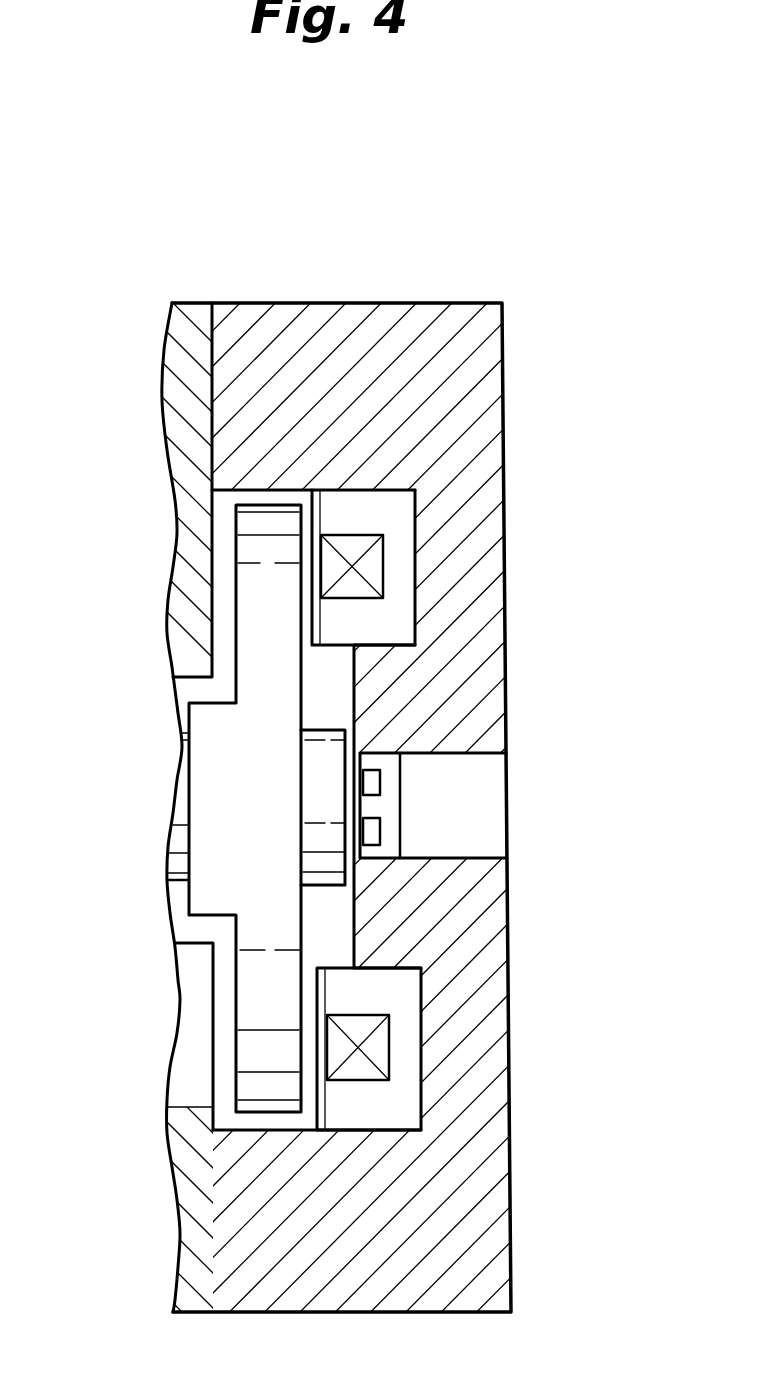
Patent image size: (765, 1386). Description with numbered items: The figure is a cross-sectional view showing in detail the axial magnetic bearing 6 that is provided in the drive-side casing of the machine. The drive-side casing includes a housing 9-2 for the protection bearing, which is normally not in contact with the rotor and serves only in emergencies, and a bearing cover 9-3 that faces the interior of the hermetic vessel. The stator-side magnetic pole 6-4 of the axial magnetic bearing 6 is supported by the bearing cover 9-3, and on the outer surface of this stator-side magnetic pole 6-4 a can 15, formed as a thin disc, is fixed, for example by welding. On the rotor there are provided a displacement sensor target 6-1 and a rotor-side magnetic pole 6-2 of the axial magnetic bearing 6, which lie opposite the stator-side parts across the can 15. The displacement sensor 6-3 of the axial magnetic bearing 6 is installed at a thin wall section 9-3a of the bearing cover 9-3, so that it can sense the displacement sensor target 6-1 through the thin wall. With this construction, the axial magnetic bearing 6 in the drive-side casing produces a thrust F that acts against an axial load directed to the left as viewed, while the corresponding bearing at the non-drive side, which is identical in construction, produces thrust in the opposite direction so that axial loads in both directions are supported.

The housing 9-2 is at (192, 320).
The bearing cover 9-3 is at (407, 358).
The thin wall section 9-3a is at (357, 748).
The displacement sensor 6-3 is at (392, 810).
The stator-side magnetic pole 6-4 is at (402, 547).
The axial magnetic bearing 6 is at (413, 1131).
The rotor-side magnetic pole 6-2 is at (252, 1055).
The displacement sensor target 6-1 is at (308, 870).
The can 15 is at (315, 526).
The force direction F is at (143, 810).